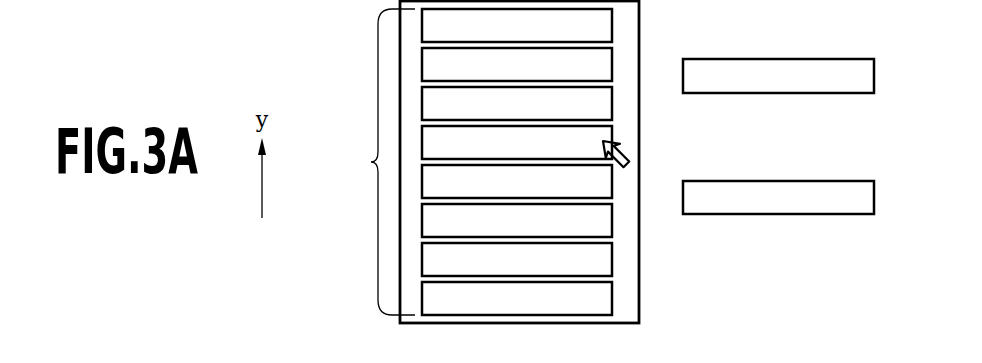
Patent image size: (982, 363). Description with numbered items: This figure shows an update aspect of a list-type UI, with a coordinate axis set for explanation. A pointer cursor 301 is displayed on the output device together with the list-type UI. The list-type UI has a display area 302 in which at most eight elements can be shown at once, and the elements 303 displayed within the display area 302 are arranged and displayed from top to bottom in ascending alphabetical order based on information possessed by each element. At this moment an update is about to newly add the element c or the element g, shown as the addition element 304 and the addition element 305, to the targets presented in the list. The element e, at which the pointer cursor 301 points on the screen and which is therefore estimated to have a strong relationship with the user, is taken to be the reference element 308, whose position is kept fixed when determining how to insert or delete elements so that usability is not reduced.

The pointer cursor 301 is at (622, 142).
The display area 302 is at (639, 293).
The elements 303 is at (469, 162).
The addition element 304 is at (792, 93).
The addition element 305 is at (792, 214).
The reference element 308 is at (422, 133).